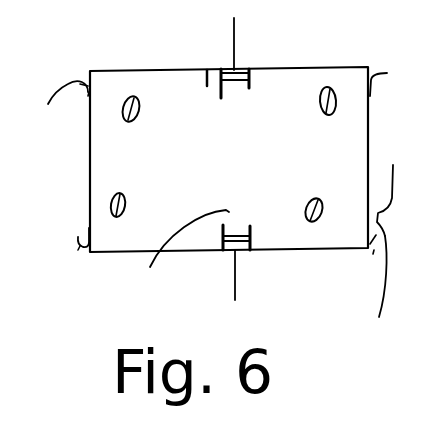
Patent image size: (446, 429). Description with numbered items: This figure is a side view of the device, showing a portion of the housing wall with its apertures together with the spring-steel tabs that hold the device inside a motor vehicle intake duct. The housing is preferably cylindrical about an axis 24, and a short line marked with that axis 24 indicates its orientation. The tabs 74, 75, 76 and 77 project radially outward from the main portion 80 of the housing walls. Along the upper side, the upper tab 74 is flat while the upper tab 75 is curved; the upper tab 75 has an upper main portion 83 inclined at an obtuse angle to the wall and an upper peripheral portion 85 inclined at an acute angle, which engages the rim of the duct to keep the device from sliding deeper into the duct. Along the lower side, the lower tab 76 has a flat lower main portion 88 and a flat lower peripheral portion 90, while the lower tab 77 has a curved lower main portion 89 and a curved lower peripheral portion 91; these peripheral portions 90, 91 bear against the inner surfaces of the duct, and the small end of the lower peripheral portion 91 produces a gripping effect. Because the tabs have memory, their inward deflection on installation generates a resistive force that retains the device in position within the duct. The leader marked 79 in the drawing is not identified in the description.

The axis 24 is at (236, 287).
The upper tab 74 is at (385, 56).
The upper tab 75 is at (245, 64).
The lower tab 76 is at (372, 258).
The lower tab 77 is at (79, 252).
The panel 79 is at (167, 88).
The main portion of the walls 80 is at (178, 251).
The upper main portion 83 is at (87, 95).
The upper peripheral portion 85 is at (63, 103).
The lower main portion 88 is at (390, 188).
The lower main portion 89 is at (88, 229).
The lower peripheral portion 90 is at (374, 292).
The lower peripheral portion 91 is at (78, 251).